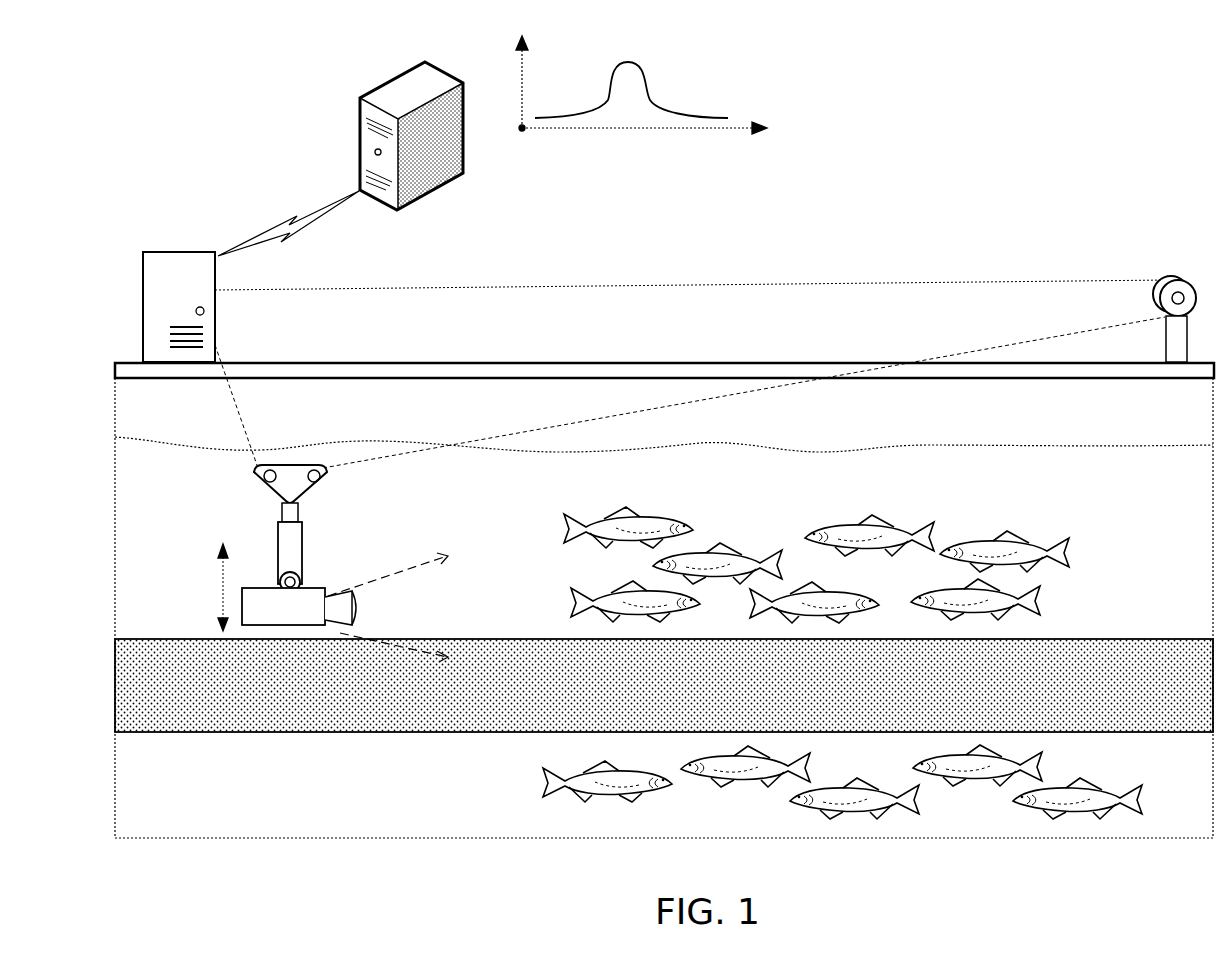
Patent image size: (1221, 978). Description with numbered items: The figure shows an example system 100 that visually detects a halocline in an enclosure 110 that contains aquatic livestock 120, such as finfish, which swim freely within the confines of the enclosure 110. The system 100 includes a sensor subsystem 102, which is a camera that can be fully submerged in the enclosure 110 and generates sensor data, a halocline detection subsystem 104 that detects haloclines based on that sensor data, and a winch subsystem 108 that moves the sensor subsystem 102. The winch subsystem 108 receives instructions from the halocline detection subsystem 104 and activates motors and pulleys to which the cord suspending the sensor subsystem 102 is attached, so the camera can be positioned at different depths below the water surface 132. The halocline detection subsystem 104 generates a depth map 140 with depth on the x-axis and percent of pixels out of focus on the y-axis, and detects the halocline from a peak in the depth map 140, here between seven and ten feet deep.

The system 100 is at (166, 116).
The sensor subsystem 102 is at (305, 586).
The halocline detection subsystem 104 is at (360, 128).
The winch subsystem 108 is at (669, 360).
The enclosure 110 is at (115, 512).
The livestock 120 is at (1002, 534).
The water surface 132 is at (746, 426).
The depth map 140 is at (724, 49).